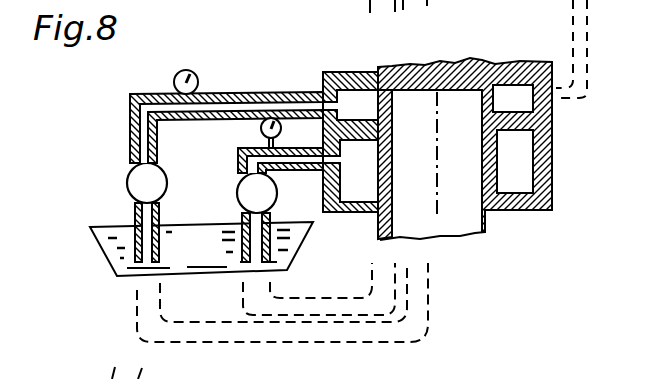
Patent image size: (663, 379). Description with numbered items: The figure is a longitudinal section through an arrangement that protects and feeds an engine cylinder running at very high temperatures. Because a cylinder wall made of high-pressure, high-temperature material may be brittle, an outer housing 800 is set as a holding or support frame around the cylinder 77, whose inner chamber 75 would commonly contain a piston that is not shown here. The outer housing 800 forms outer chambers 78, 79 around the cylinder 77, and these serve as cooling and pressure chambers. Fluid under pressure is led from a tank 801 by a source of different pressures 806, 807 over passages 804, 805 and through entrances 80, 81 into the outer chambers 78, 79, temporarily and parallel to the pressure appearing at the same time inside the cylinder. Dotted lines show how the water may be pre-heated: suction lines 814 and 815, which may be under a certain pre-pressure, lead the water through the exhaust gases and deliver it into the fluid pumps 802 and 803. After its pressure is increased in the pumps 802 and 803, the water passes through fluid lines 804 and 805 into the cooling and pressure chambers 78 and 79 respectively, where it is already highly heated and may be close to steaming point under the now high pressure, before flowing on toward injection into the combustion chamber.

The inner chamber 75 is at (426, 148).
The cylinder 77 is at (457, 90).
The outer chamber 78 is at (388, 100).
The outer chamber 79 is at (553, 172).
The entrance 80 is at (349, 98).
The entrance 81 is at (359, 171).
The outer housing 800 is at (330, 213).
The tank 801 is at (102, 230).
The fluid pump 802 is at (137, 182).
The fluid pump 803 is at (245, 190).
The fluid line 804 is at (132, 123).
The fluid line 805 is at (250, 143).
The source of different pressures 806 is at (196, 72).
The source of different pressures 807 is at (292, 95).
The suction line 814 is at (417, 299).
The suction line 815 is at (383, 275).